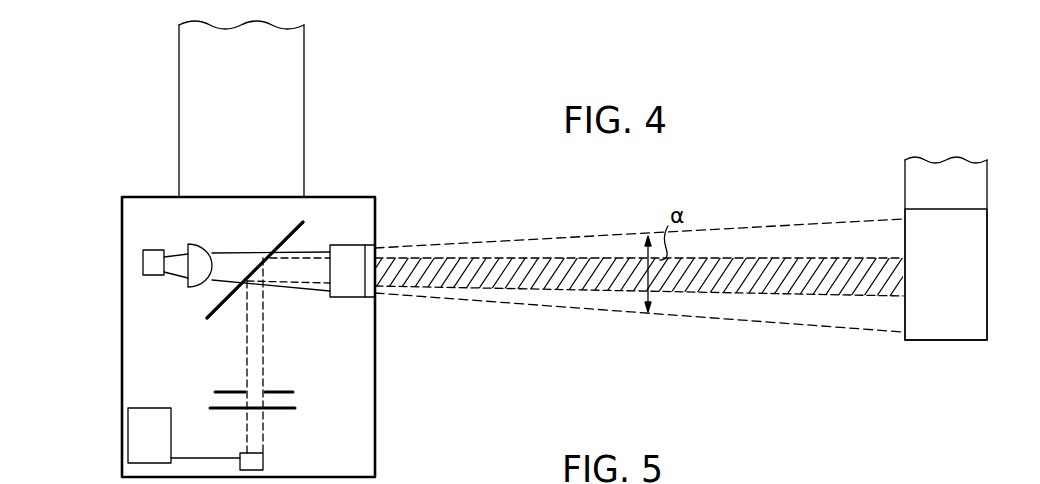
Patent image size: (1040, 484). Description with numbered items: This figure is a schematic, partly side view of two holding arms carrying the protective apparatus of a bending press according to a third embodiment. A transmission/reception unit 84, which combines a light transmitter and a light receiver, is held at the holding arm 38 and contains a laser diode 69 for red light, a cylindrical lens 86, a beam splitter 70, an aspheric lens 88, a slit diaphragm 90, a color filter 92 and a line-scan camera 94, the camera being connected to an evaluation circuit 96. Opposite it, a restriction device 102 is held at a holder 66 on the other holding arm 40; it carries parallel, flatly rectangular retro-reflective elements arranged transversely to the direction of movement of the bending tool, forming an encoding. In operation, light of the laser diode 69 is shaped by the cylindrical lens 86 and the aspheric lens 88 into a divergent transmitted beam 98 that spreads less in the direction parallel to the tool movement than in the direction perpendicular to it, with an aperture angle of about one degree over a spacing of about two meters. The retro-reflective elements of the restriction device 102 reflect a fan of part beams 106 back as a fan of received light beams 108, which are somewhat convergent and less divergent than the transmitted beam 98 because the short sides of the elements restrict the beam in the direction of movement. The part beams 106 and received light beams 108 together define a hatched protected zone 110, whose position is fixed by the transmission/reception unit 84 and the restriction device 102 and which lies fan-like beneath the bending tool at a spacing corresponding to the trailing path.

The holding arm 38 is at (179, 42).
The holding arm 40 is at (975, 180).
The holder 66 is at (975, 252).
The laser diode 69 is at (153, 250).
The beam splitter 70 is at (290, 232).
The transmission/reception unit 84 is at (119, 228).
The cylindrical lens 86 is at (195, 284).
The aspheric lens 88 is at (351, 252).
The slit diaphragm 90 is at (282, 392).
The color filter 92 is at (297, 408).
The line-scan camera 94 is at (263, 462).
The evaluation circuit 96 is at (128, 430).
The transmitted beam 98 is at (785, 228).
The restriction device 102 is at (898, 302).
The part beams 106 is at (790, 298).
The received light beams 108 is at (263, 330).
The protected zone 110 is at (567, 280).